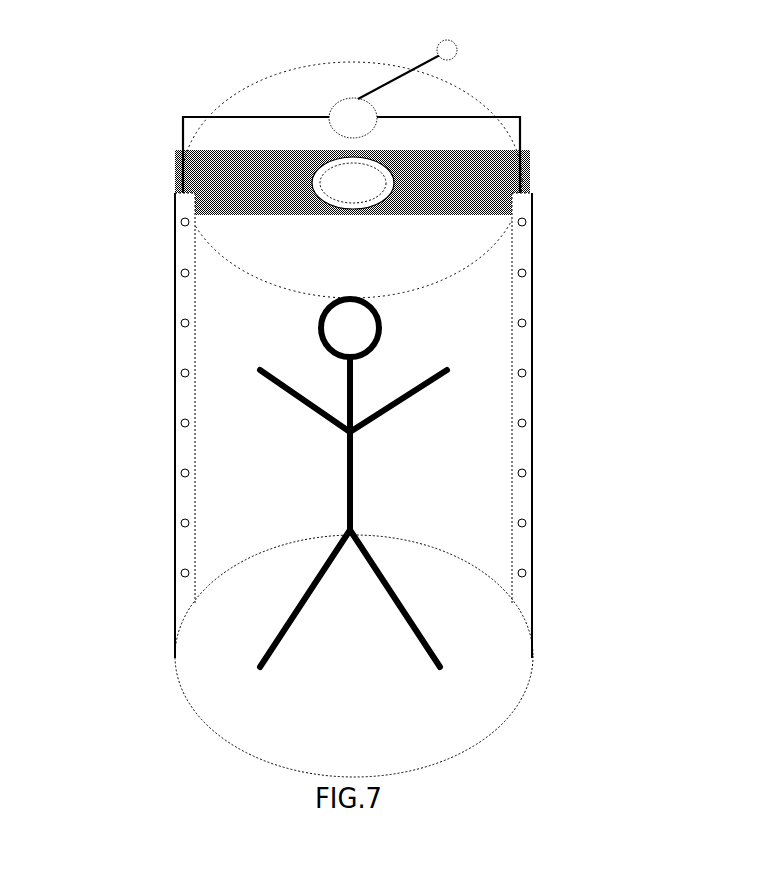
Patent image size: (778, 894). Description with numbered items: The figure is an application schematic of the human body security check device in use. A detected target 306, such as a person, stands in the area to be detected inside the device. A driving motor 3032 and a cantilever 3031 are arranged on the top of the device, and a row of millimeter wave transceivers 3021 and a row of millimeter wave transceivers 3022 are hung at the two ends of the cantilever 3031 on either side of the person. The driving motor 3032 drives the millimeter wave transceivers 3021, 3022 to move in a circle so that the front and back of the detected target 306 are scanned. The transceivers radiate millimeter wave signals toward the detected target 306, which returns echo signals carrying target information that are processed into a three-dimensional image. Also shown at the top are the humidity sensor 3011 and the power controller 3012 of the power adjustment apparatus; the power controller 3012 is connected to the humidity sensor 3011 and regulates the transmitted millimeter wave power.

The humidity sensor 3011 is at (457, 43).
The power controller 3012 is at (377, 107).
The millimeter wave transceivers 3021 is at (180, 200).
The millimeter wave transceivers 3022 is at (534, 200).
The cantilever 3031 is at (500, 166).
The driving motor 3032 is at (392, 177).
The detected target 306 is at (418, 393).